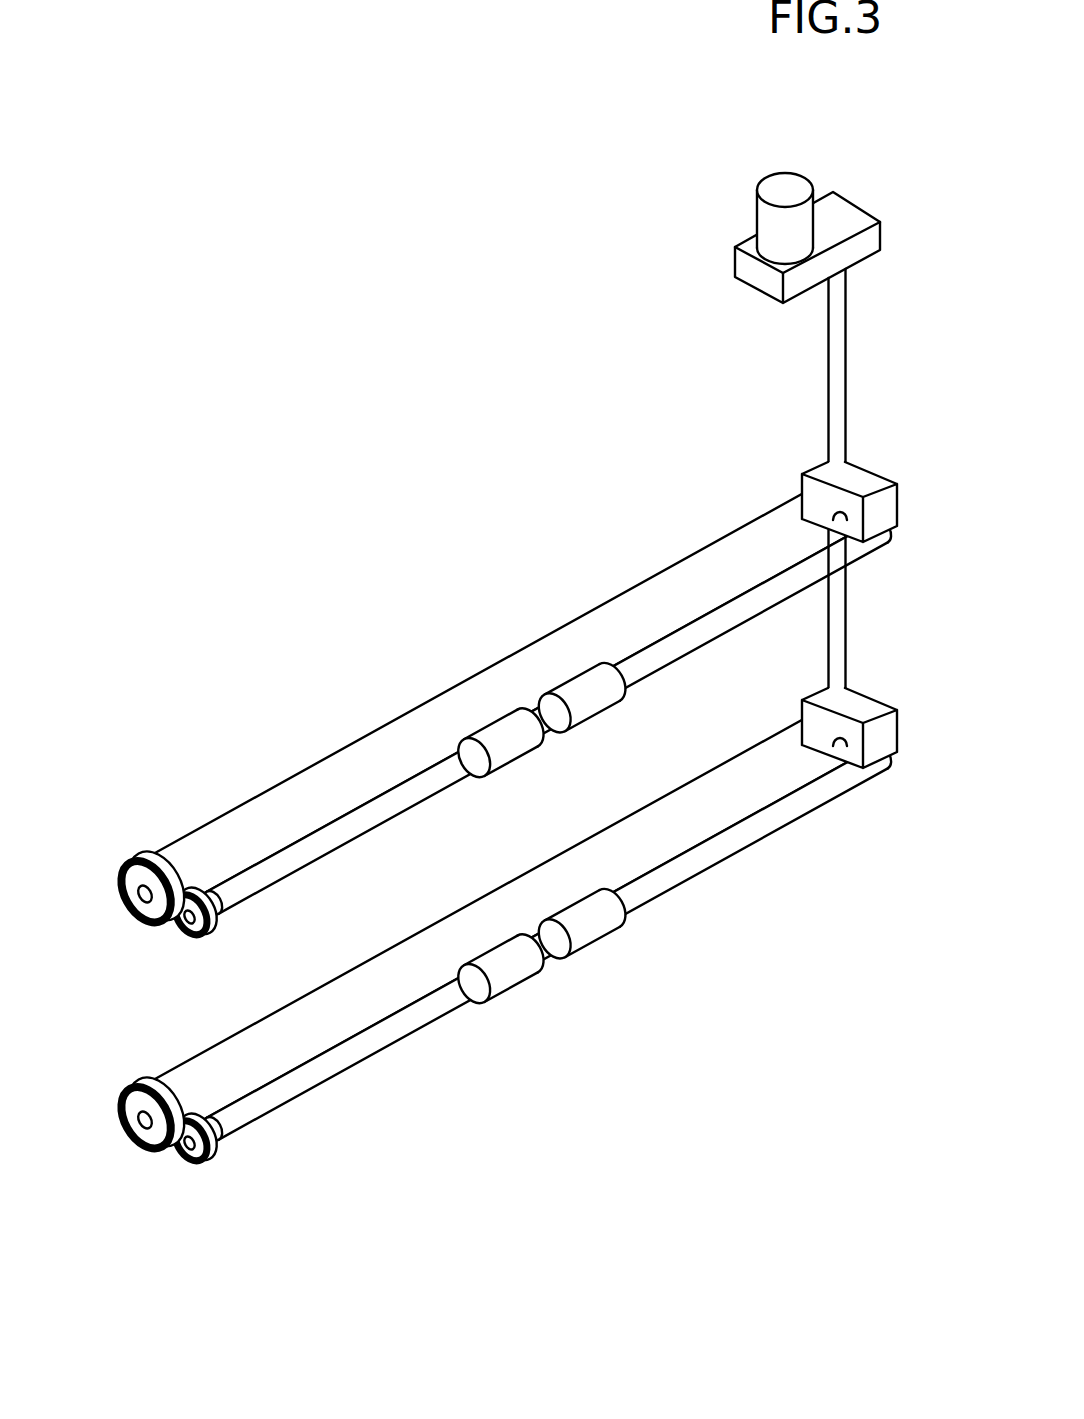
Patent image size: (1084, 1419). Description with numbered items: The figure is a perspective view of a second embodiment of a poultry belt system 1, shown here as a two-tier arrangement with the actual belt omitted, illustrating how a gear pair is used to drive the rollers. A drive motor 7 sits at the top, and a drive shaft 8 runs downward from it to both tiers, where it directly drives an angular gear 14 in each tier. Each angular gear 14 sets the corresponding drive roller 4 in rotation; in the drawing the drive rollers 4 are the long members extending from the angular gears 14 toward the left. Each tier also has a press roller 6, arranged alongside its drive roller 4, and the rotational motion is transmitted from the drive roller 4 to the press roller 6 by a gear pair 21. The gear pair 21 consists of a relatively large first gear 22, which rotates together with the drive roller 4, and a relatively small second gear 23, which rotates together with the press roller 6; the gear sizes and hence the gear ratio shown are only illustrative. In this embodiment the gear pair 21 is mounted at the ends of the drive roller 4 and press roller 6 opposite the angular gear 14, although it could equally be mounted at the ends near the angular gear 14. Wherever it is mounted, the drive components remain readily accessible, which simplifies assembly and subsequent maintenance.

The poultry belt system 1 is at (320, 252).
The drive roller 4 is at (325, 808).
The press roller 6 is at (548, 744).
The drive motor 7 is at (770, 190).
The drive shaft 8 is at (837, 353).
The angular gear 14 is at (873, 468).
The gear pair 21 is at (183, 1022).
The first gear 22 is at (143, 860).
The second gear 23 is at (192, 930).